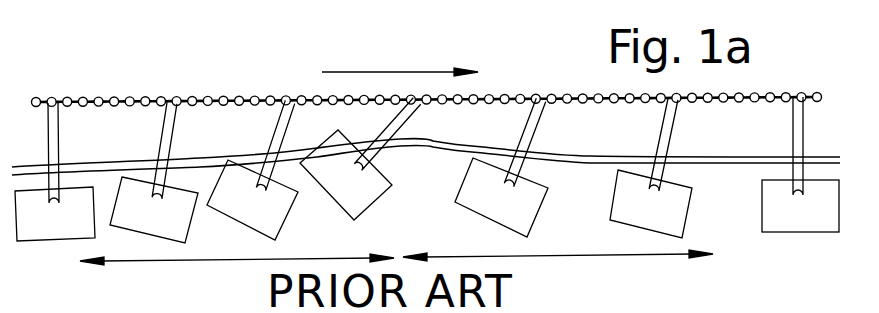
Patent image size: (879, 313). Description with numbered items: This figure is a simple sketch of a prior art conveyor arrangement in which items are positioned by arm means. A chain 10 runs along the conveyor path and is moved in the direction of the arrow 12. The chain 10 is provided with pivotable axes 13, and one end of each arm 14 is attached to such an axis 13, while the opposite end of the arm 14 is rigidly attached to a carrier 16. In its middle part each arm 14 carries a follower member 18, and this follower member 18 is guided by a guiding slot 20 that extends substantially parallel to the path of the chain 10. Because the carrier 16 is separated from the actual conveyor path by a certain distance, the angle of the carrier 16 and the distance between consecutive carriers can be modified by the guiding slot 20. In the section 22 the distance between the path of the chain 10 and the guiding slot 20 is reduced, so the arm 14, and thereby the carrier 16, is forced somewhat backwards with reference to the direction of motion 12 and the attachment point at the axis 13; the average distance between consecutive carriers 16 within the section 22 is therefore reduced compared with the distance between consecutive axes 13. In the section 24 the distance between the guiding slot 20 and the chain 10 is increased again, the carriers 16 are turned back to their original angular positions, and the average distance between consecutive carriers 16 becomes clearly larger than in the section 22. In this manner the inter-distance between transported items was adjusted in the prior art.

The chain 10 is at (230, 98).
The arrow 12 is at (405, 69).
The pivotable axis 13 is at (47, 97).
The arm 14 is at (541, 114).
The carrier 16 is at (803, 220).
The follower member 18 is at (787, 158).
The guiding slot 20 is at (723, 160).
The section 22 is at (190, 262).
The section 24 is at (610, 255).